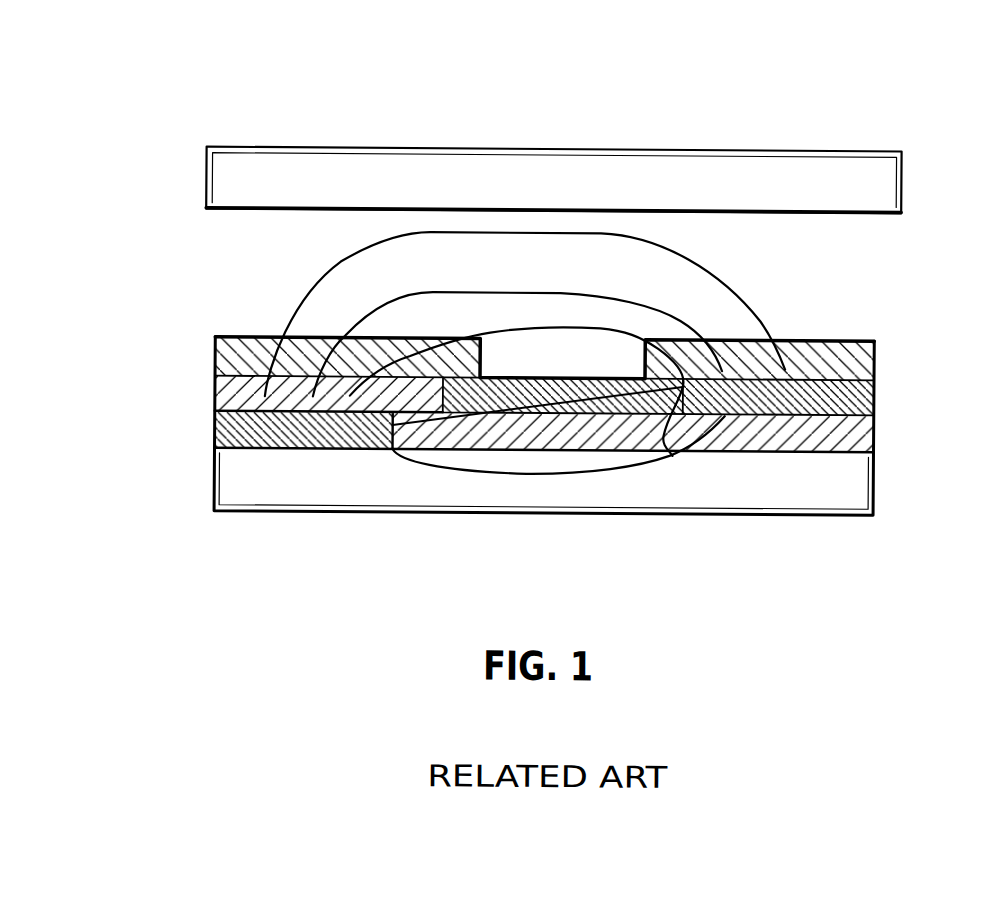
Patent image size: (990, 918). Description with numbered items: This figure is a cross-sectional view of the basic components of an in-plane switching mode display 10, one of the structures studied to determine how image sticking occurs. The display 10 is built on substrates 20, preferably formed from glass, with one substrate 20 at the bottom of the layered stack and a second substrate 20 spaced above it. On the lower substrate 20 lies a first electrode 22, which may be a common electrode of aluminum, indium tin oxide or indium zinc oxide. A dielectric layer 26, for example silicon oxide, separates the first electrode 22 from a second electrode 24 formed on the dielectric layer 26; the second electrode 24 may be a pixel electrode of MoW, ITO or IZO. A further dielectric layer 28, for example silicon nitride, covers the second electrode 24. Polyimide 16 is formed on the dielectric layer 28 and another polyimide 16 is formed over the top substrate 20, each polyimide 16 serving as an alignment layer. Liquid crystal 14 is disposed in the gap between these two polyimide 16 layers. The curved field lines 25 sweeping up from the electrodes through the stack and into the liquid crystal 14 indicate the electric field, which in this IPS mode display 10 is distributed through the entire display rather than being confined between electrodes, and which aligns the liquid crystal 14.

The IPS mode display 10 is at (944, 86).
The liquid crystal 14 is at (852, 281).
The polyimide 16 is at (900, 213).
The substrate 20 is at (773, 157).
The first electrode 22 is at (217, 432).
The second electrode 24 is at (874, 398).
The field lines 25 is at (490, 333).
The dielectric layer 26 is at (874, 434).
The dielectric layer 28 is at (874, 352).